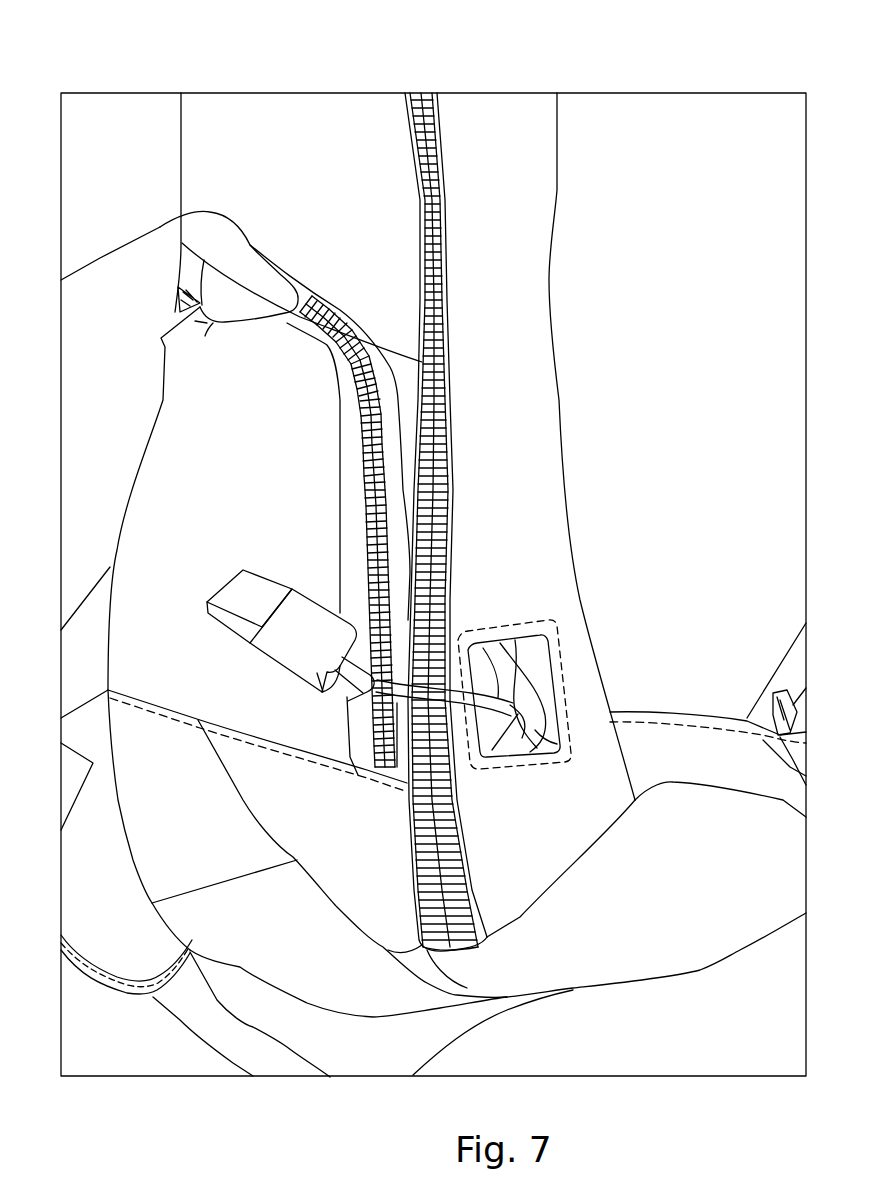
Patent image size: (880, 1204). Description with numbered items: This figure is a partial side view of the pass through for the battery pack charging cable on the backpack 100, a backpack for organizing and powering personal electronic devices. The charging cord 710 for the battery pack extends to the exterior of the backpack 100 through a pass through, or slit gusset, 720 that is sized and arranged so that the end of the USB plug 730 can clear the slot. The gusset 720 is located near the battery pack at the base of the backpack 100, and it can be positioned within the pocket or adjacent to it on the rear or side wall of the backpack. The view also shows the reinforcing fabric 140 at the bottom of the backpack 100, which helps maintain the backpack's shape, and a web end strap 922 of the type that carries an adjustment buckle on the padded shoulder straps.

The backpack 100 is at (764, 90).
The reinforcing fabric 140 is at (379, 898).
The charging cord 710 is at (373, 767).
The pass through (slit gusset) 720 is at (550, 753).
The USB plug 730 is at (306, 612).
The web end strap 922 is at (268, 1052).